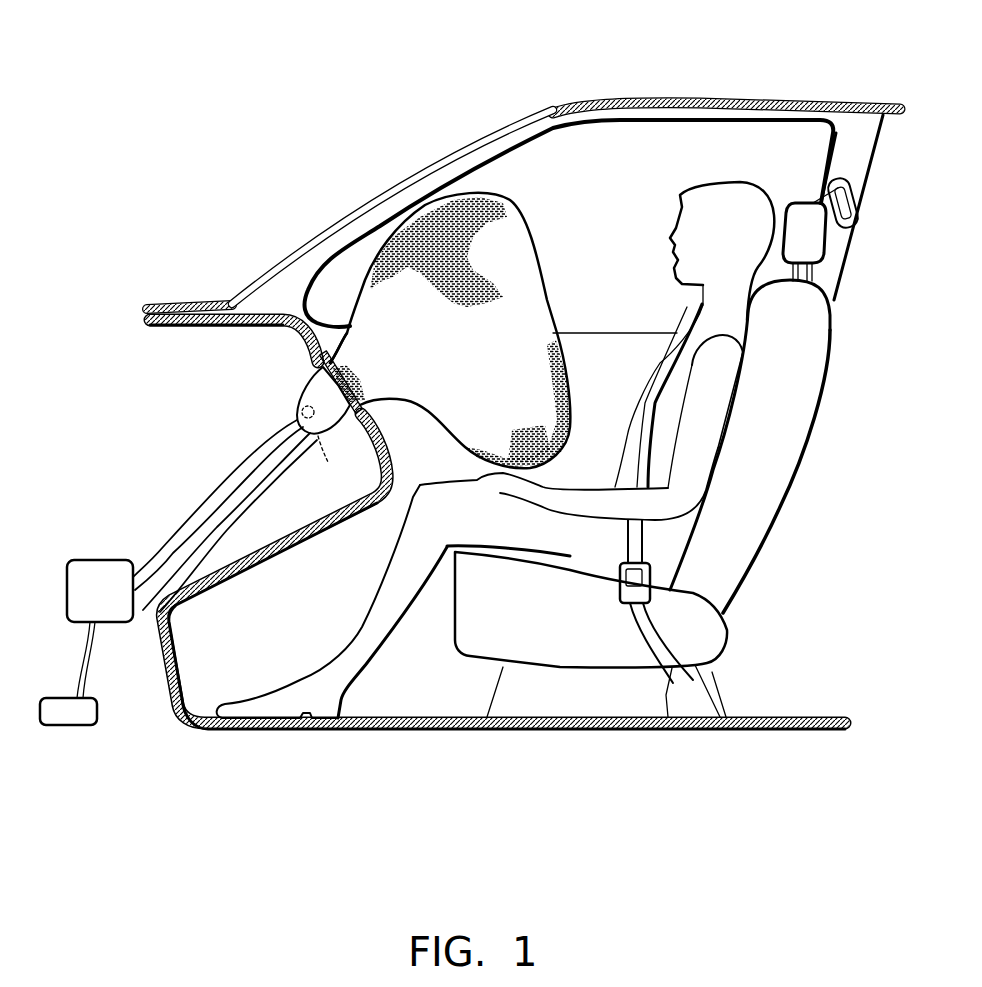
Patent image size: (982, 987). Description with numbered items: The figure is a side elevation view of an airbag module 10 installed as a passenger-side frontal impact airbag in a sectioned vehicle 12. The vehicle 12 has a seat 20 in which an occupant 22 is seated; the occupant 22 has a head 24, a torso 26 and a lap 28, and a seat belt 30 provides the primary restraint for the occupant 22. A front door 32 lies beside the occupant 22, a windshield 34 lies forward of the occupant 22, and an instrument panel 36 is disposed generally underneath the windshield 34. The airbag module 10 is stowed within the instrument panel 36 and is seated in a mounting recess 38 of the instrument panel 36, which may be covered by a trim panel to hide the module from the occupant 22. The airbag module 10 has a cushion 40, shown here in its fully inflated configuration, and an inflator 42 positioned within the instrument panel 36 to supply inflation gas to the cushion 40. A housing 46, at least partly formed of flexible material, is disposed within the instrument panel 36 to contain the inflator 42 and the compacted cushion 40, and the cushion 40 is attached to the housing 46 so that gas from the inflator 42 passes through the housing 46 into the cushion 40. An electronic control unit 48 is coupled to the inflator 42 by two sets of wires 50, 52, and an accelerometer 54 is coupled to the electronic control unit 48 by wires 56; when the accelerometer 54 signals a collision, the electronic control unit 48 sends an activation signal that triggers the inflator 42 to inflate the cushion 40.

The airbag module 10 is at (345, 265).
The vehicle 12 is at (645, 84).
The seat 20 is at (760, 497).
The occupant 22 is at (515, 429).
The head 24 is at (725, 223).
The torso 26 is at (682, 375).
The lap 28 is at (580, 487).
The seat belt 30 is at (645, 617).
The front door 32 is at (622, 256).
The windshield 34 is at (397, 185).
The instrument panel 36 is at (353, 527).
The mounting recess 38 is at (313, 363).
The cushion 40 is at (528, 180).
The inflator 42 is at (342, 459).
The housing 46 is at (322, 392).
The electronic control unit 48 is at (98, 577).
The wires 50 is at (218, 466).
The wires 52 is at (233, 516).
The accelerometer 54 is at (77, 717).
The wires 56 is at (80, 655).